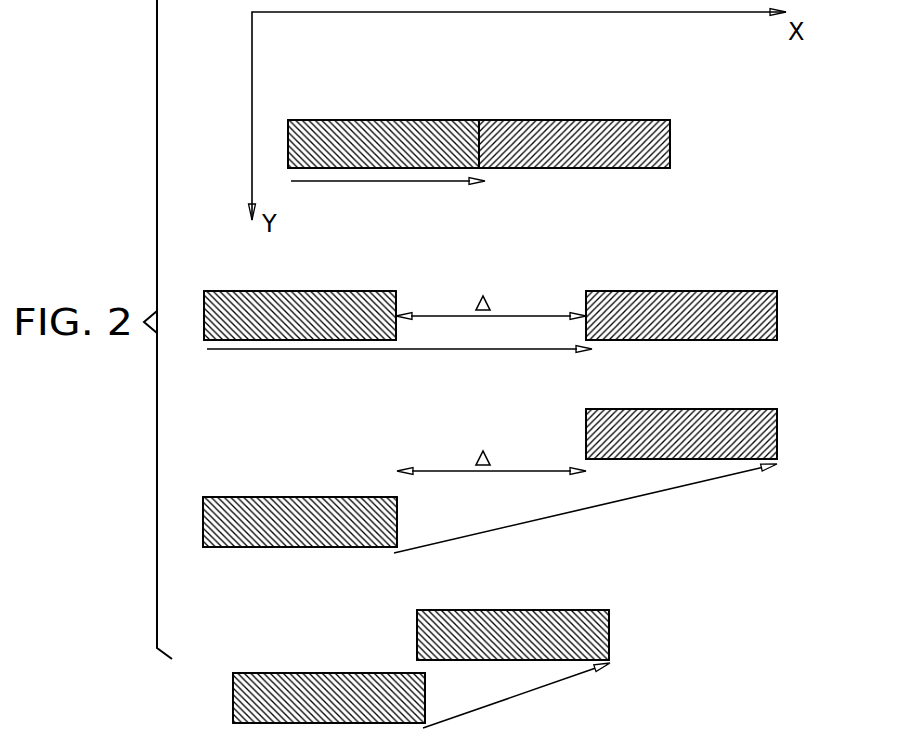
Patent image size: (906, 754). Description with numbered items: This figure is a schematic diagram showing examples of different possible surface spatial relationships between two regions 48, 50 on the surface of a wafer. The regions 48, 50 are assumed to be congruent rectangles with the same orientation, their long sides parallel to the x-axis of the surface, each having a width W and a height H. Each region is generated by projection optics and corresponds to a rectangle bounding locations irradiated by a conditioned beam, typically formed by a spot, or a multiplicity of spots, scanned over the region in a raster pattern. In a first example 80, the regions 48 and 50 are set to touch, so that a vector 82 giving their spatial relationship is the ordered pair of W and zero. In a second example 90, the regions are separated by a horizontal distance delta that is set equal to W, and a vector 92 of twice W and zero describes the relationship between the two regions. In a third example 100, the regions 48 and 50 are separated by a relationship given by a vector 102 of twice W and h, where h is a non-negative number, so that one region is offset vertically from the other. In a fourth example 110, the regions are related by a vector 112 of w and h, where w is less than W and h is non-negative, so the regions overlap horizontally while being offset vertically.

The region 48 is at (398, 120).
The region 50 is at (563, 120).
The first example 80 is at (658, 98).
The vector 82 is at (388, 183).
The second example 90 is at (737, 268).
The vector 92 is at (390, 352).
The third example 100 is at (740, 395).
The vector 102 is at (623, 499).
The fourth example 110 is at (707, 673).
The vector 112 is at (527, 693).